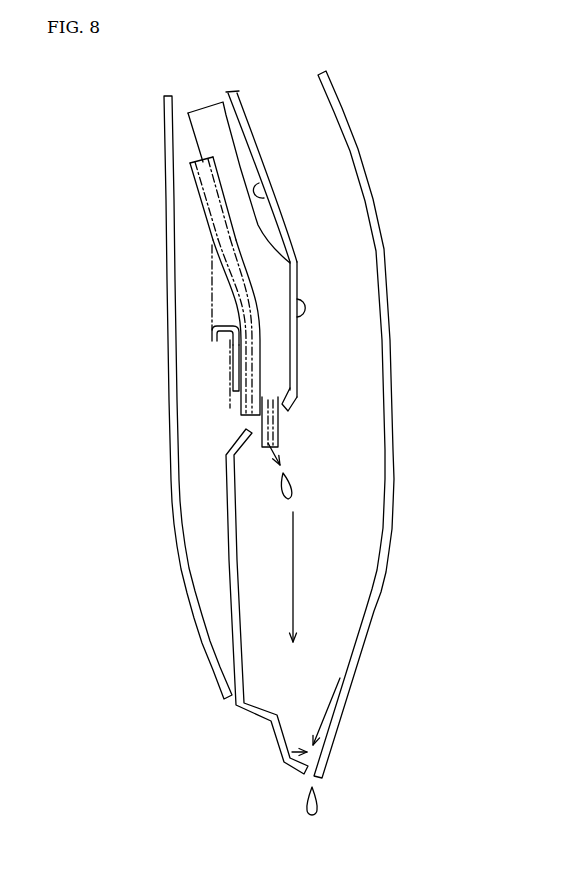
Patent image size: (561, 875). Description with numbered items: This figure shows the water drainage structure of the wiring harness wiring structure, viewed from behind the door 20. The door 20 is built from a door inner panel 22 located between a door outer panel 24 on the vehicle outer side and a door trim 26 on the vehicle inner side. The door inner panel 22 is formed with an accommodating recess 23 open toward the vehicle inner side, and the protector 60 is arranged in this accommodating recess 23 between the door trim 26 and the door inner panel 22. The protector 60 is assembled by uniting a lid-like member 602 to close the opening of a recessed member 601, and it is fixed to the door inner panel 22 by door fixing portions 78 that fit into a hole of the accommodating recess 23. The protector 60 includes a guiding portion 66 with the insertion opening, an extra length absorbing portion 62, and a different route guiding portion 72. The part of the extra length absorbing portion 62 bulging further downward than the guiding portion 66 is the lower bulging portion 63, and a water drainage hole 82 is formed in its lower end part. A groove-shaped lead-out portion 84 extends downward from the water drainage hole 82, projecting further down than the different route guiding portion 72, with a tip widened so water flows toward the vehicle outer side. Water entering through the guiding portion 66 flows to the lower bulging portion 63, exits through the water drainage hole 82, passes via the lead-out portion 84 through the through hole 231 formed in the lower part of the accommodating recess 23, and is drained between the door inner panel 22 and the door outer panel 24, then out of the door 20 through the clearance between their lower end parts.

The door 20 is at (90, 137).
The door inner panel 22 is at (284, 222).
The accommodating recess 23 is at (262, 185).
The door outer panel 24 is at (358, 140).
The door trim 26 is at (167, 443).
The protector 60 is at (226, 258).
The extra length absorbing portion 62 is at (278, 280).
The lower bulging portion 63 is at (232, 366).
The guiding portion 66 is at (212, 330).
The different route guiding portion 72 is at (258, 347).
The door fixing portion 78 is at (306, 310).
The water drainage hole 82 is at (292, 411).
The lead-out portion 84 is at (279, 430).
The through hole 231 is at (243, 428).
The recessed member 601 is at (218, 130).
The lid-like member 602 is at (203, 203).